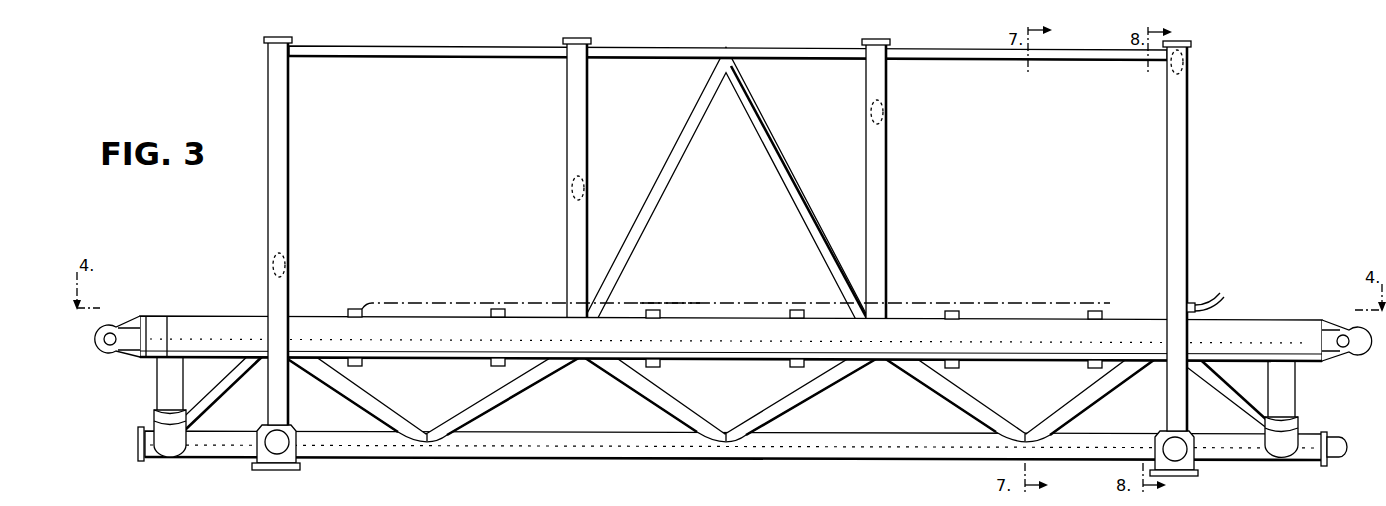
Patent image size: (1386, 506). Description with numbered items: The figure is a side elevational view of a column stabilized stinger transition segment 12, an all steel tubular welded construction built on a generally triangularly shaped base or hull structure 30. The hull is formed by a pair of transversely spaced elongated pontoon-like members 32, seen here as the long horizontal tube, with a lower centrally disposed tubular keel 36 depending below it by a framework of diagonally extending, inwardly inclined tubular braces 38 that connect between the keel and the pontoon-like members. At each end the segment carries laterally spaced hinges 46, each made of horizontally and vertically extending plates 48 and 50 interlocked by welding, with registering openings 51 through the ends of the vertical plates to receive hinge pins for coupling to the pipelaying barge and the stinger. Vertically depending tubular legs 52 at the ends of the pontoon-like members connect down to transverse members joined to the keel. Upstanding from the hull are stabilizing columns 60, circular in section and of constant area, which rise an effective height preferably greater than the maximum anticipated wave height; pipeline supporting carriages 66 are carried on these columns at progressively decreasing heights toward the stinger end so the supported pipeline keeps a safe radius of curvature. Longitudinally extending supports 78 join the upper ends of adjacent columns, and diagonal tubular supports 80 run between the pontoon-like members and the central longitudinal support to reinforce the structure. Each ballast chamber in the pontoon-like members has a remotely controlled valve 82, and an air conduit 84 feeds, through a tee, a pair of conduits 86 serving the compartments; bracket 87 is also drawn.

The stinger transition segment 12 is at (929, 180).
The base or hull structure 30 is at (1022, 319).
The tubular or pontoon-like members 32 is at (462, 312).
The tubular keel 36 is at (602, 460).
The tubular braces 38 is at (812, 393).
The hinges 46 is at (132, 312).
The horizontally extending plates 48 is at (1330, 322).
The vertically extending plates 50 is at (1333, 321).
The registering openings 51 is at (1348, 353).
The tubular legs 52 is at (1166, 412).
The stabilizing columns 60 is at (1168, 137).
The pipeline supporting carriages 66 is at (860, 107).
The longitudinally extending supports 78 is at (948, 61).
The diagonal tubular supports 80 is at (812, 230).
The remotely controlled valve 82 is at (490, 371).
The conduit 84 is at (1210, 296).
The conduits 86 is at (685, 303).
The bracket 87 is at (793, 310).